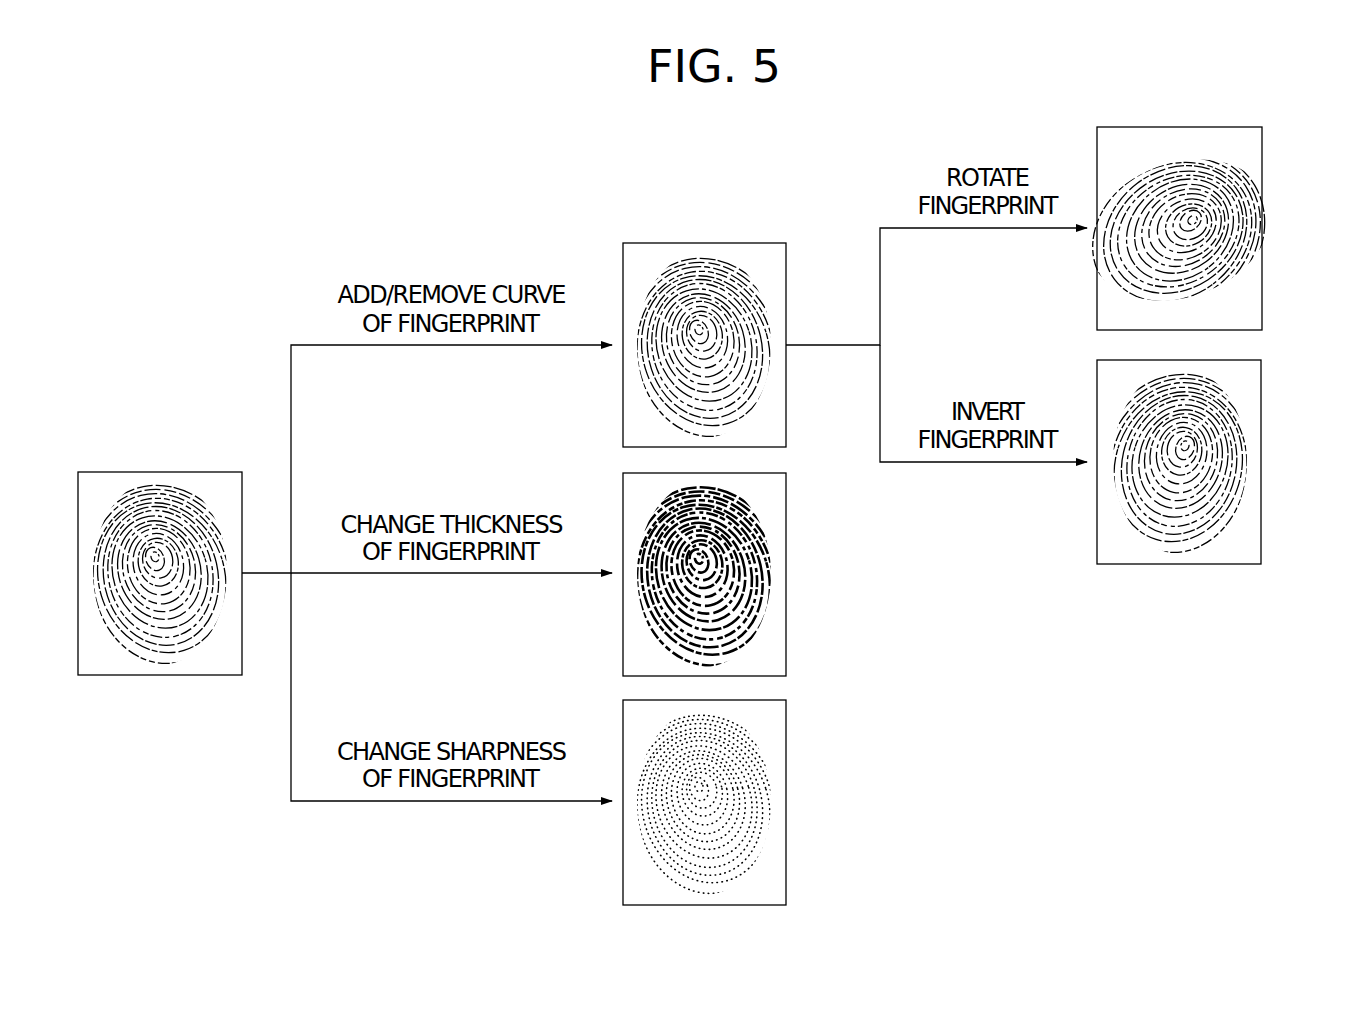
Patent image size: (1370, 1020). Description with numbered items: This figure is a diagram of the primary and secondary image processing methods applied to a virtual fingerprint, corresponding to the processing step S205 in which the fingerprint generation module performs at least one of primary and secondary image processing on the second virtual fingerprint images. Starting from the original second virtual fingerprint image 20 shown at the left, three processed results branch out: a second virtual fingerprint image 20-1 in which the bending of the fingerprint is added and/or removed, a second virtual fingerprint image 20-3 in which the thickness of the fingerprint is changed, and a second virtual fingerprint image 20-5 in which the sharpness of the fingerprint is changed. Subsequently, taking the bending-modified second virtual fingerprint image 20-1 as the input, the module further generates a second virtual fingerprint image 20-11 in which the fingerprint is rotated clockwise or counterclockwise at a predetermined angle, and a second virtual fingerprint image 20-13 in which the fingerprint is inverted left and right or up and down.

The second virtual fingerprint image 20 is at (162, 470).
The second virtual fingerprint image with bending added and/or removed 20-1 is at (787, 274).
The second virtual fingerprint image with changed thickness 20-3 is at (787, 500).
The second virtual fingerprint image with changed sharpness 20-5 is at (787, 730).
The rotated second virtual fingerprint image 20-11 is at (1263, 175).
The inverted second virtual fingerprint image 20-13 is at (1263, 407).
The primary and secondary image processing step S205 is at (1266, 98).